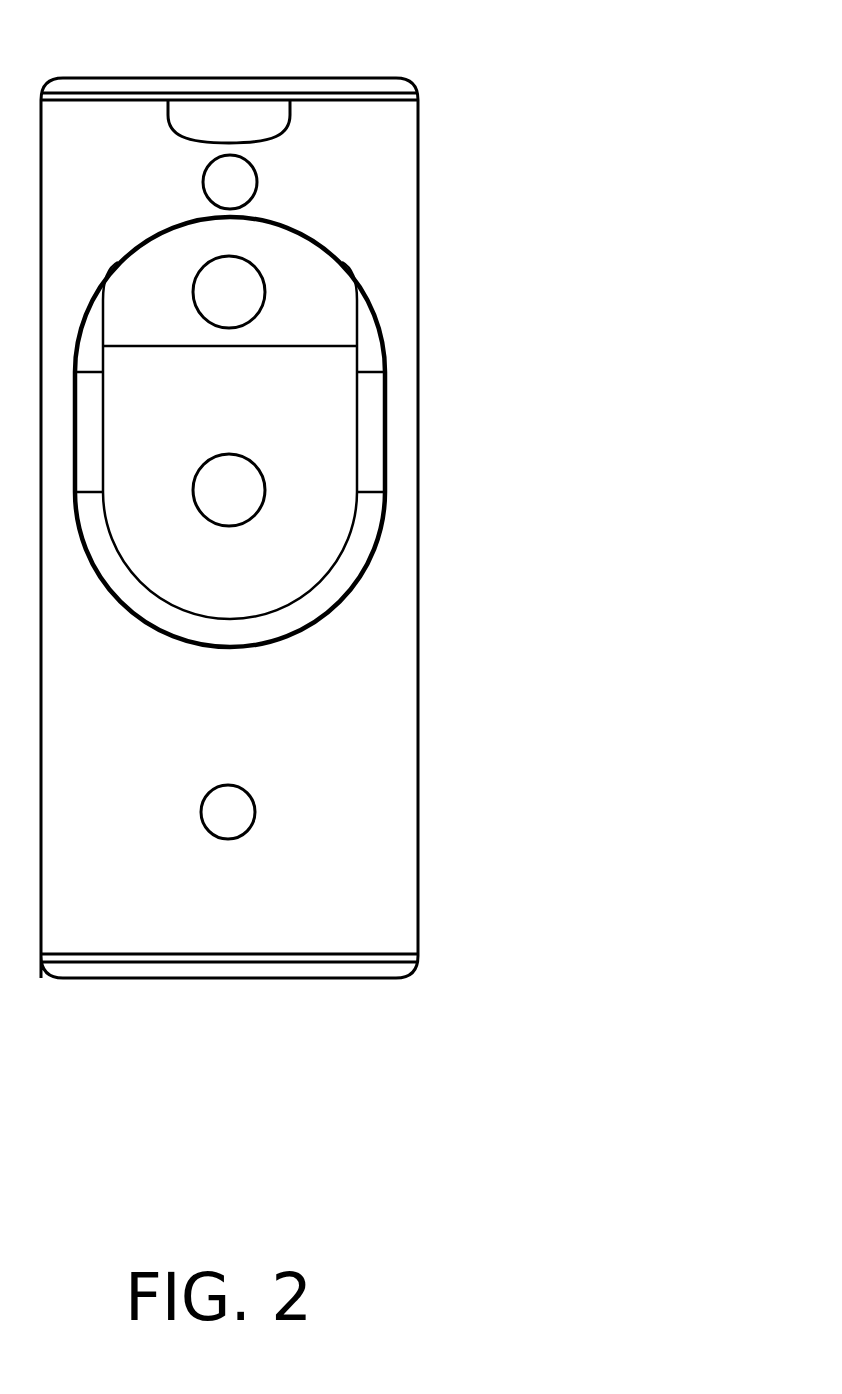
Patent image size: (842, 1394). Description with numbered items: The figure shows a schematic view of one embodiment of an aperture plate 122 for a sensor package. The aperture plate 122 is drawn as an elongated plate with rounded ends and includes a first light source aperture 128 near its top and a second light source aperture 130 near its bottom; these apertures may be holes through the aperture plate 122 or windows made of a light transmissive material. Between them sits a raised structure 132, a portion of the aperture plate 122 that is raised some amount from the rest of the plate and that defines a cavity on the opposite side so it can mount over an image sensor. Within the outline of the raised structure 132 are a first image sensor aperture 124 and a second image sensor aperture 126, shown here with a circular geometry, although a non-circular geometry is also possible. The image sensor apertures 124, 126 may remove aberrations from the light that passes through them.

The aperture plate 122 is at (413, 90).
The first image sensor aperture 124 is at (228, 293).
The second image sensor aperture 126 is at (229, 490).
The first light source aperture 128 is at (243, 177).
The second light source aperture 130 is at (238, 808).
The raised structure 132 is at (387, 352).